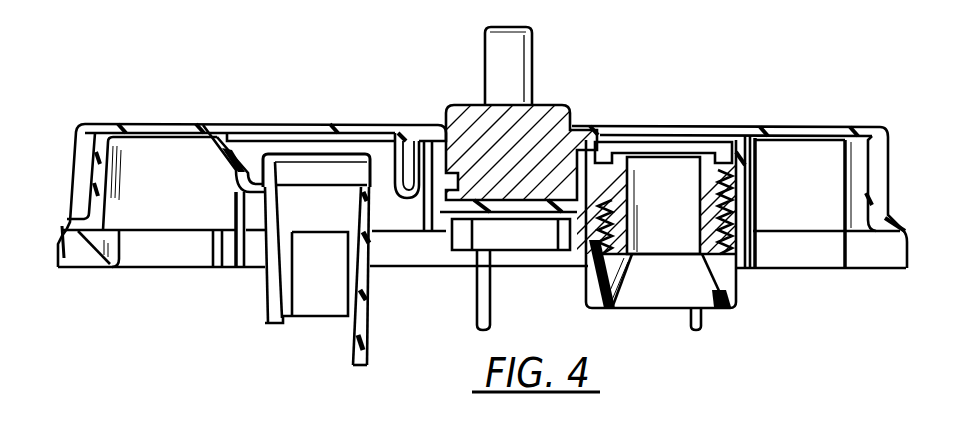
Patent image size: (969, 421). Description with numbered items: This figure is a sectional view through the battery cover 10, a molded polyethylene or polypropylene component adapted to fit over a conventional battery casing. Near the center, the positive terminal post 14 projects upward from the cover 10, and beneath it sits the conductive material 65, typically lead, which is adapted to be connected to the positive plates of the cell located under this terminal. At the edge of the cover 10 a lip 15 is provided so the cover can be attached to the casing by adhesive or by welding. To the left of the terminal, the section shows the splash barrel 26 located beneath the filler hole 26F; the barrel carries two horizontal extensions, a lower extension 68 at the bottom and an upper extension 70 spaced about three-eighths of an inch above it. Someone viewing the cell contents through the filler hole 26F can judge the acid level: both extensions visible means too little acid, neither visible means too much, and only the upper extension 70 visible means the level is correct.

The cover 10 is at (752, 103).
The positive terminal post 14 is at (526, 58).
The lip 15 is at (62, 226).
The splash barrel 26 is at (272, 287).
The filler hole 26F is at (350, 167).
The conductive material 65 is at (553, 118).
The lower horizontal extension 68 is at (352, 368).
The upper horizontal extension 70 is at (288, 326).